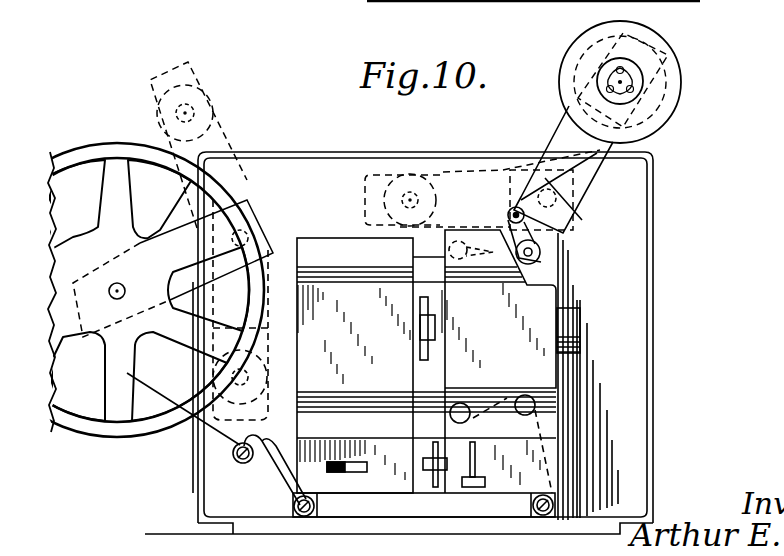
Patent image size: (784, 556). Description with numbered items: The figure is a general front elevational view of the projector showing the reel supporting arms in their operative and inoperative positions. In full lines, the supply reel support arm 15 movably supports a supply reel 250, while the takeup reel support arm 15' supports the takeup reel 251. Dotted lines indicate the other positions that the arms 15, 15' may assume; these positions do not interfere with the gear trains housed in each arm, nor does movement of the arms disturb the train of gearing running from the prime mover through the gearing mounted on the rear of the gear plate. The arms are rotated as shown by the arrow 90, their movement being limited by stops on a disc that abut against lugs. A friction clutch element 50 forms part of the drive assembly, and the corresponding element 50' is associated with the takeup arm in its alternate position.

The film supply reel 251 is at (93, 147).
The supply reel 250 is at (680, 110).
The supply reel support arm 15 is at (548, 180).
The takeup reel support arm 15' is at (336, 213).
The friction clutch element 50 is at (407, 173).
The sprocket in alternate position 50' is at (214, 98).
The arrow 90 is at (505, 97).